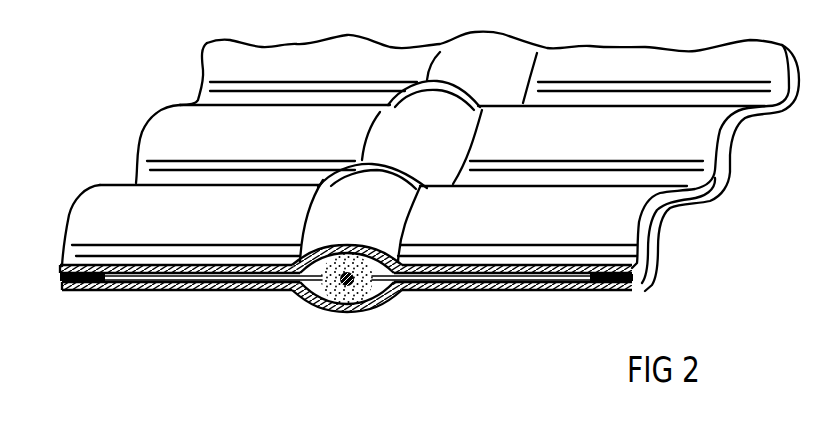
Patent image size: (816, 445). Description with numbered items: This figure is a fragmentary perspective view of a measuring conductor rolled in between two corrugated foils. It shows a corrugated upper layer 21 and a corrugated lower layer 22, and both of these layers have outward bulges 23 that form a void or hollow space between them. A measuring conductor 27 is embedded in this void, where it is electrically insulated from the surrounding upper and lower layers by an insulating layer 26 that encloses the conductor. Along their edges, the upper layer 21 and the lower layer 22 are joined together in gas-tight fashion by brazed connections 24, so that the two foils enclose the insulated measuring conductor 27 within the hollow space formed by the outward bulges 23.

The corrugated upper layer 21 is at (509, 266).
The corrugated lower layer 22 is at (494, 291).
The outward bulges 23 is at (341, 314).
The brazed connections 24 is at (80, 291).
The insulating layer 26 is at (353, 246).
The measuring conductor 27 is at (355, 288).